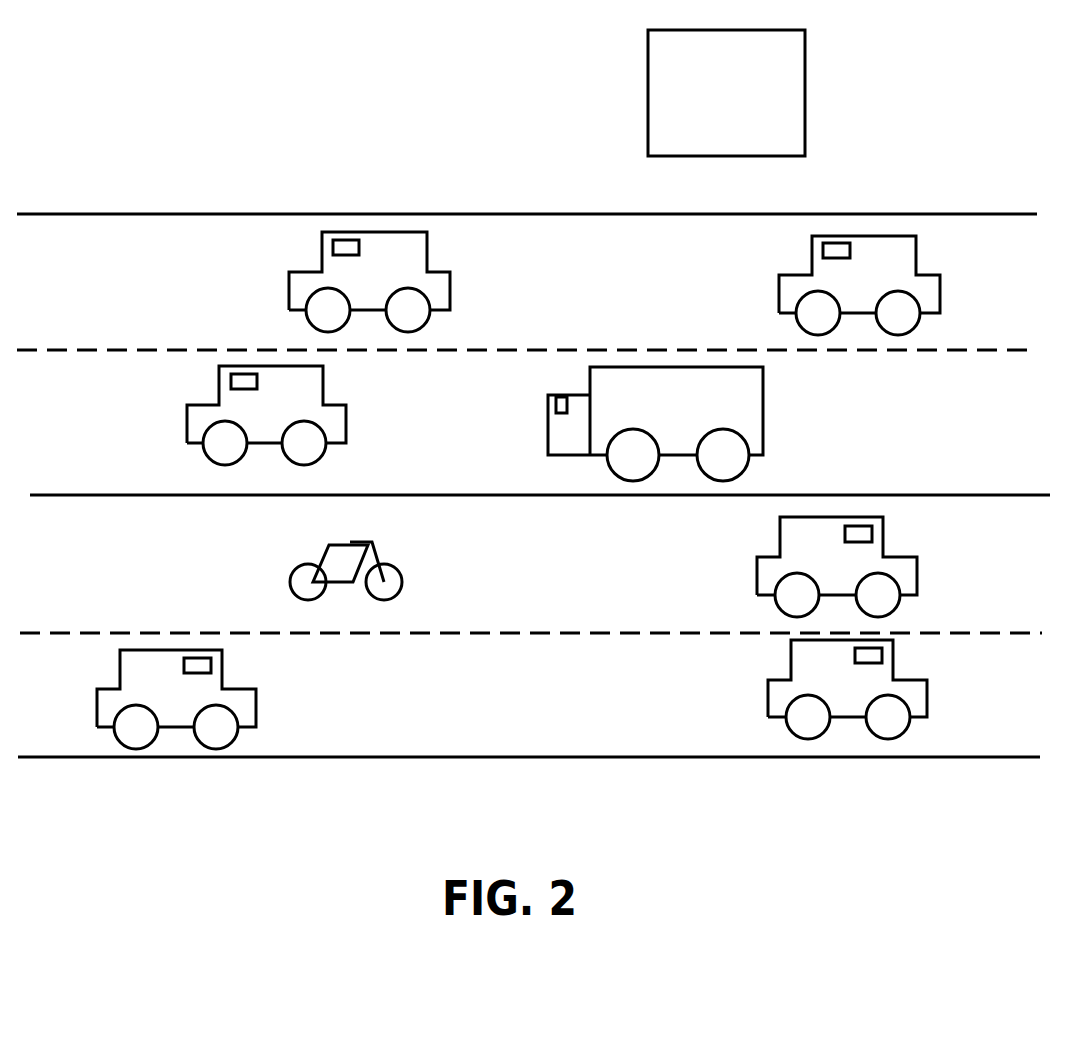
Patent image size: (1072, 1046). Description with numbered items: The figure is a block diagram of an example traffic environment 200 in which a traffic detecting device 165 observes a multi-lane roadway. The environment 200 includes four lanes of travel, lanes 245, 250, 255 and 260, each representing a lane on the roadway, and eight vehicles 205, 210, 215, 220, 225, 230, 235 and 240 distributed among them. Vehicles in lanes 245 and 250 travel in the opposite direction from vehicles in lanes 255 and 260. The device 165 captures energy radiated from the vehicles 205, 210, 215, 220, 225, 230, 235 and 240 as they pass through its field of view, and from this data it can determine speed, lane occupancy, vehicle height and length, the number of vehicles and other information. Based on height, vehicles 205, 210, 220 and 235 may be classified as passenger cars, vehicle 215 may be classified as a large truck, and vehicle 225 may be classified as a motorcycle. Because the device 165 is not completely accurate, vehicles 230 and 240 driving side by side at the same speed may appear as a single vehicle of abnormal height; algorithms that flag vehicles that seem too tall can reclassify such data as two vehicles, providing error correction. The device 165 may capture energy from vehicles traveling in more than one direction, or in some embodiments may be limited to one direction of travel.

The environment 200 is at (93, 76).
The device 165 is at (706, 119).
The vehicle 205 is at (360, 281).
The vehicle 210 is at (860, 284).
The vehicle 215 is at (653, 414).
The vehicle 220 is at (250, 417).
The vehicle 225 is at (328, 570).
The vehicle 230 is at (800, 564).
The vehicle 235 is at (131, 692).
The vehicle 240 is at (802, 681).
The lane 245 is at (1035, 317).
The lane 250 is at (1038, 444).
The lane 255 is at (1040, 587).
The lane 260 is at (1040, 719).